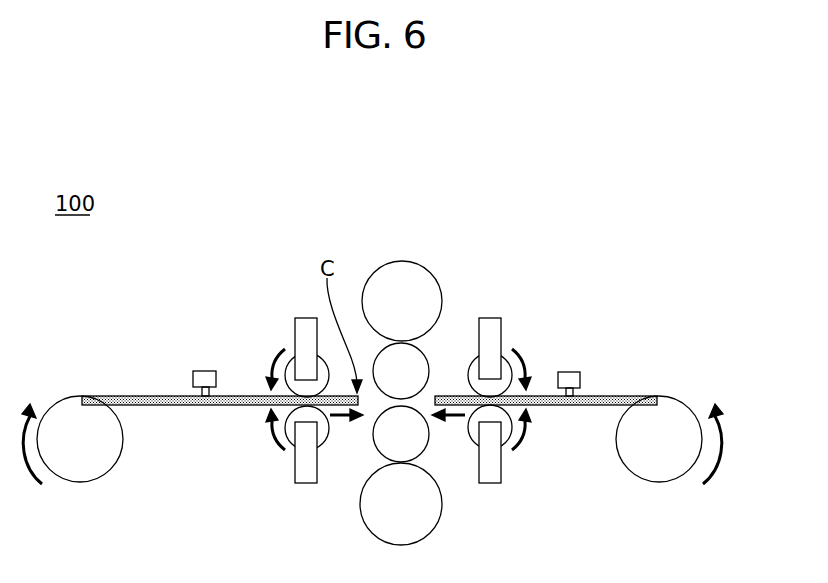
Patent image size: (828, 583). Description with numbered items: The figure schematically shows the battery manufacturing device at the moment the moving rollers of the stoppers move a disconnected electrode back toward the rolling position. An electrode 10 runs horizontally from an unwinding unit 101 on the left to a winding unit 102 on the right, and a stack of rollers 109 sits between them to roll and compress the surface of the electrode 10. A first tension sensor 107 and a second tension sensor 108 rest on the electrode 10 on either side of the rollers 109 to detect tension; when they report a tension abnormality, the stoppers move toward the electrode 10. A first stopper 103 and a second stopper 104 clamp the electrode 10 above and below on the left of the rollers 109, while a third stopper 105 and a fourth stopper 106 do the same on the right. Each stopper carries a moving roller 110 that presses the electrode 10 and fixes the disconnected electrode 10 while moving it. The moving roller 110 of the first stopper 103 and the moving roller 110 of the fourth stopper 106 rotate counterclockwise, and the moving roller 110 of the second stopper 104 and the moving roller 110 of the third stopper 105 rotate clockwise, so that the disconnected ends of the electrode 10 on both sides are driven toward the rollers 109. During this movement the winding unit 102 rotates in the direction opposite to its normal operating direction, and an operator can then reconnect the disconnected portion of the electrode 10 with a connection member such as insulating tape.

The electrode 10 is at (142, 396).
The unwinding unit 101 is at (83, 466).
The winding unit 102 is at (659, 466).
The first stopper 103 is at (304, 326).
The second stopper 104 is at (306, 476).
The third stopper 105 is at (494, 326).
The fourth stopper 106 is at (491, 476).
The first tension sensor 107 is at (200, 372).
The second tension sensor 108 is at (569, 372).
The rollers 109 is at (410, 423).
The moving roller 110 is at (270, 352).